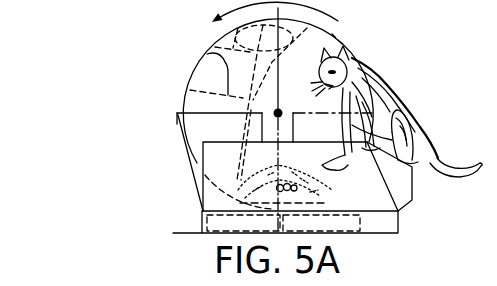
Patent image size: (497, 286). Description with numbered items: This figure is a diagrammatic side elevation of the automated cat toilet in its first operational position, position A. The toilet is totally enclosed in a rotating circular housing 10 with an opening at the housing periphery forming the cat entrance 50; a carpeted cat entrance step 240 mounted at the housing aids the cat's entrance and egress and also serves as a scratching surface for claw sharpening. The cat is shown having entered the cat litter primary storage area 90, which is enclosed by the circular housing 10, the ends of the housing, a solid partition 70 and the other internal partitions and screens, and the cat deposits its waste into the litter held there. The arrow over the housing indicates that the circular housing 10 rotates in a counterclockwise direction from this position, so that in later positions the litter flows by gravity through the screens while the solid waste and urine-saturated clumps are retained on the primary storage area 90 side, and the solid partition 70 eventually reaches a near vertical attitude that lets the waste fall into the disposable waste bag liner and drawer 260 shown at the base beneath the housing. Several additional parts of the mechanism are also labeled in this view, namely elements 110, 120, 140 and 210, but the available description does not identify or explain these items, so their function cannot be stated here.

The circular housing 10 is at (200, 163).
The cat entrance 50 is at (334, 37).
The solid partition 70 is at (266, 65).
The cat litter primary storage area 90 is at (338, 166).
The sifting screen 110 is at (236, 37).
The waste compartment 120 is at (207, 55).
The housing side wall 140 is at (185, 162).
The support frame 210 is at (187, 92).
The cat entrance step 240 is at (412, 187).
The disposable waste bag liner and drawer 260 is at (228, 224).